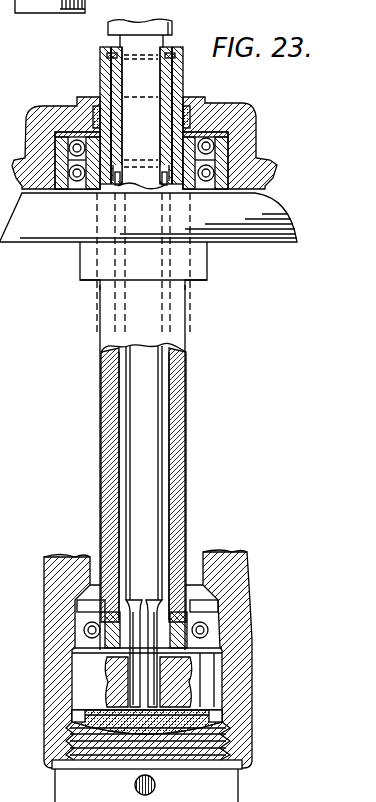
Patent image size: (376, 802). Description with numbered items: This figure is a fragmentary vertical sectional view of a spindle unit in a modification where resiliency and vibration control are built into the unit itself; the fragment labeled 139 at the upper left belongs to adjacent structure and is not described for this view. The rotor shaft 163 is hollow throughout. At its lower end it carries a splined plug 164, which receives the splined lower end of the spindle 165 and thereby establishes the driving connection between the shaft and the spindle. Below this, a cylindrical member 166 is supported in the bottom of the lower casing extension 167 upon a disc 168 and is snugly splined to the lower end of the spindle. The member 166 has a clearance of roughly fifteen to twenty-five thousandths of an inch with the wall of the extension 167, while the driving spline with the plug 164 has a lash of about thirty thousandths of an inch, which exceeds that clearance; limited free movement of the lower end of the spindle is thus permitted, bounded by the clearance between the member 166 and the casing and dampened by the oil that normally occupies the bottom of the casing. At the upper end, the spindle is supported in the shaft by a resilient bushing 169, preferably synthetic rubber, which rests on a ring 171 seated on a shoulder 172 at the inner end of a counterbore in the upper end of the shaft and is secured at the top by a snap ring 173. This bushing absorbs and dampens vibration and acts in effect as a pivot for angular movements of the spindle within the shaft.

The adjacent figure component 139 is at (52, 13).
The snap ring 173 is at (170, 47).
The resilient bushing 169 is at (176, 78).
The ring 171 is at (170, 162).
The shoulder 172 is at (173, 158).
The rotor shaft 163 is at (187, 388).
The spindle 165 is at (148, 447).
The splined plug 164 is at (217, 596).
The cylindrical member 166 is at (212, 672).
The lower casing extension 167 is at (243, 695).
The disc 168 is at (225, 713).